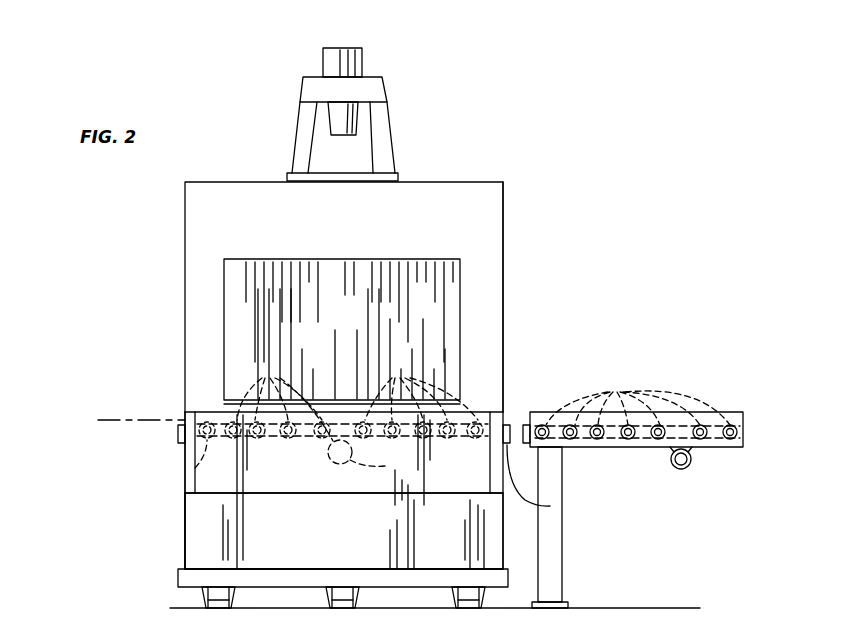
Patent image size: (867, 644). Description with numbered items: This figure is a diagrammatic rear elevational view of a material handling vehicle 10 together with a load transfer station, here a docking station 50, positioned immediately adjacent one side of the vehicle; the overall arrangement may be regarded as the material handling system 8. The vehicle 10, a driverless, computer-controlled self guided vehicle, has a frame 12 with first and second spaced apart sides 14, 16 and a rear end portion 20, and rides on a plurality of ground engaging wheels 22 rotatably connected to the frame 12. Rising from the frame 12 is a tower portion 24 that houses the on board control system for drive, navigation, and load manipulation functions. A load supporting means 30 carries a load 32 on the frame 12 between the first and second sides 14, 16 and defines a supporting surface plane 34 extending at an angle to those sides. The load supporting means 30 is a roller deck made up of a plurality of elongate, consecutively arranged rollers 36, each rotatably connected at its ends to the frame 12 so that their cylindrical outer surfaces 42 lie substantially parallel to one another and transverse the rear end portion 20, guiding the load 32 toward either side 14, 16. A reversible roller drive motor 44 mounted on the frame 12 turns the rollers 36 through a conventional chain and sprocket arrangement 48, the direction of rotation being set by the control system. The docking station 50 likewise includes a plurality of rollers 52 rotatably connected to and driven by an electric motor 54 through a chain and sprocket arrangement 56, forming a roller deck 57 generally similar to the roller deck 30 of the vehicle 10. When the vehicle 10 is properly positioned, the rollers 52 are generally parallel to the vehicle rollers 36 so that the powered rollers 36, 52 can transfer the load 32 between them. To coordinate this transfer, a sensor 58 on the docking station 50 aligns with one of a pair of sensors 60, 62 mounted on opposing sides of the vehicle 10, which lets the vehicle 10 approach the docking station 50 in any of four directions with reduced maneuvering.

The treatment system 8 is at (120, 250).
The material handling vehicle 10 is at (546, 186).
The frame 12 is at (183, 545).
The first side 14 is at (505, 540).
The second side 16 is at (185, 507).
The rear end portion 20 is at (352, 532).
The ground engaging wheels 22 is at (465, 582).
The tower portion 24 is at (490, 242).
The load supporting means 30 is at (203, 396).
The load 32 is at (352, 320).
The supporting surface plane 34 is at (118, 418).
The rollers 36 is at (357, 398).
The cylindrical outer surface 42 is at (195, 468).
The roller drive motor 44 is at (379, 469).
The chain and sprocket arrangement 48 is at (322, 452).
The docking station 50 is at (740, 400).
The rollers 52 is at (638, 399).
The electric motor 54 is at (690, 469).
The chain and sprocket arrangement 56 is at (704, 451).
The roller deck 57 is at (660, 460).
The sensor 58 is at (524, 424).
The sensor 60 is at (550, 506).
The sensor 62 is at (178, 435).